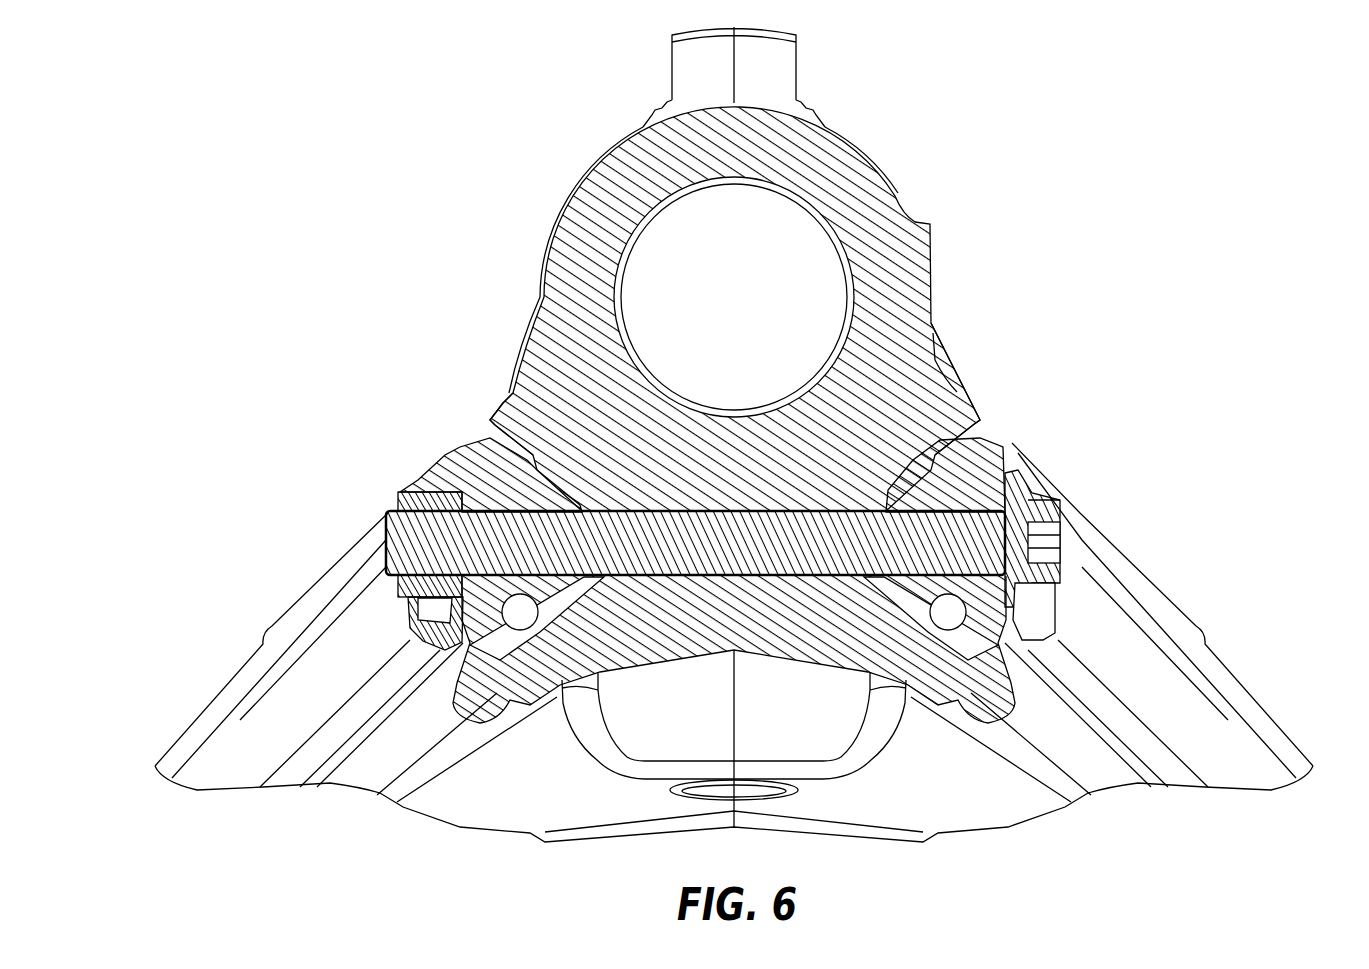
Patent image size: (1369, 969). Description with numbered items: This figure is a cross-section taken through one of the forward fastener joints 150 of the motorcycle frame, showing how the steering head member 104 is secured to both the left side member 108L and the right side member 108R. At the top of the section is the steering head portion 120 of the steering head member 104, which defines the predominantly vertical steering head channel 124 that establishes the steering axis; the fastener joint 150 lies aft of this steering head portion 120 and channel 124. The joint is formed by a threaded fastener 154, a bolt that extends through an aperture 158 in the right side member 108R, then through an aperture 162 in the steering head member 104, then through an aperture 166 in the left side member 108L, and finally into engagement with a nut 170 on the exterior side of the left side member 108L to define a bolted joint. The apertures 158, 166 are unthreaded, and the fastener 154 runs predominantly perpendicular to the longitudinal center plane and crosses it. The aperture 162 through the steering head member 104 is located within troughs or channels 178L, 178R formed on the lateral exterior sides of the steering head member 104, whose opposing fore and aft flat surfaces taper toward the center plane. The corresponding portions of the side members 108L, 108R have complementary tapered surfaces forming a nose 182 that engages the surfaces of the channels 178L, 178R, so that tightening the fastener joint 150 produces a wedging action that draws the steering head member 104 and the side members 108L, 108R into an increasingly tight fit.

The steering head member 104 is at (440, 792).
The left side member 108L is at (262, 720).
The right side member 108R is at (1203, 720).
The steering head portion 120 is at (852, 192).
The steering head channel 124 is at (635, 215).
The fastener joint 150 is at (714, 488).
The threaded fastener 154 is at (990, 540).
The aperture 158 is at (955, 522).
The aperture 162 is at (705, 520).
The aperture 166 is at (500, 515).
The nut 170 is at (402, 490).
The channel 178L is at (497, 633).
The channel 178R is at (968, 638).
The nose 182 is at (513, 393).